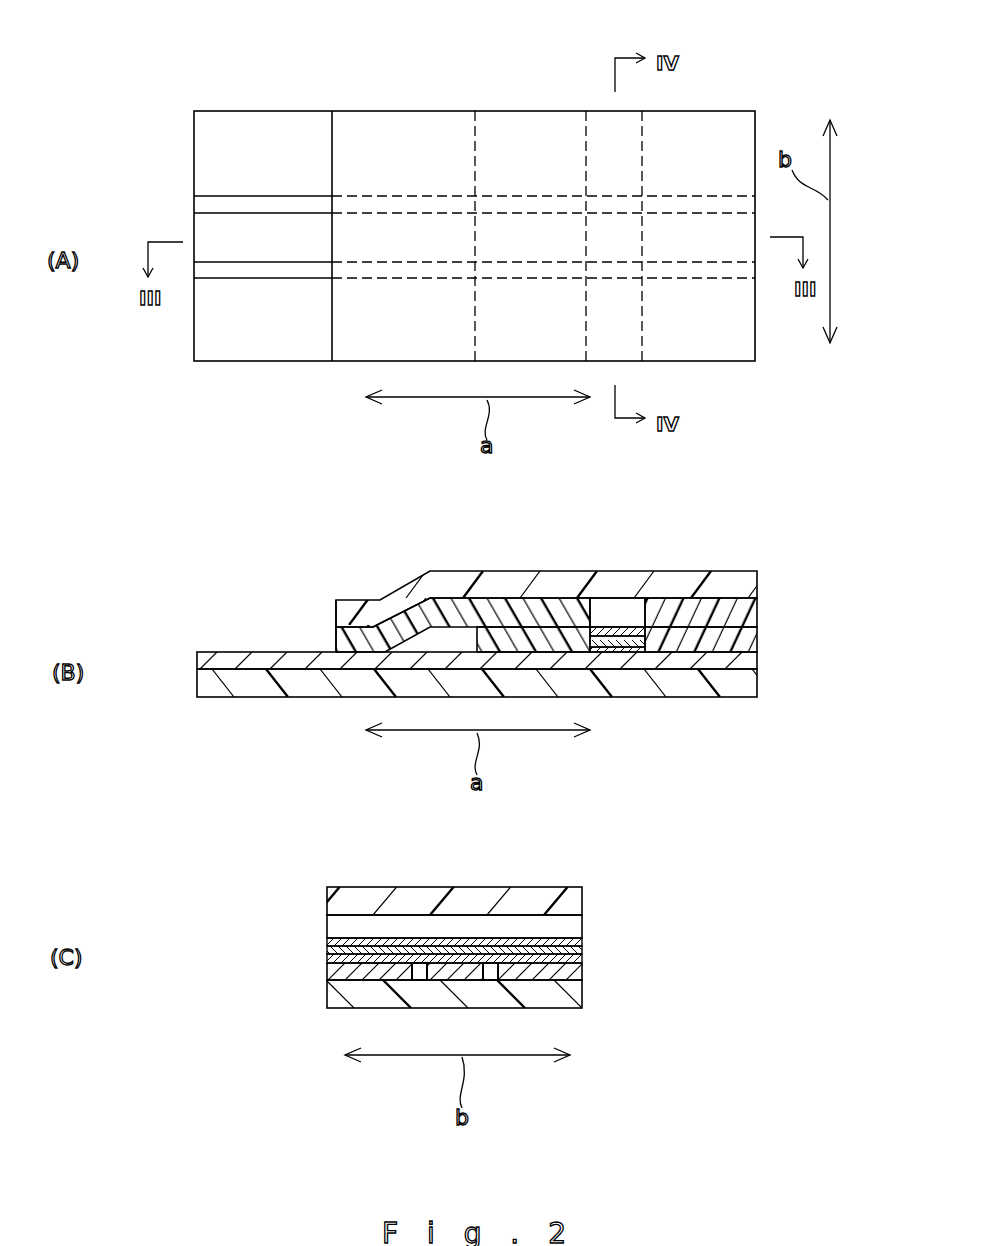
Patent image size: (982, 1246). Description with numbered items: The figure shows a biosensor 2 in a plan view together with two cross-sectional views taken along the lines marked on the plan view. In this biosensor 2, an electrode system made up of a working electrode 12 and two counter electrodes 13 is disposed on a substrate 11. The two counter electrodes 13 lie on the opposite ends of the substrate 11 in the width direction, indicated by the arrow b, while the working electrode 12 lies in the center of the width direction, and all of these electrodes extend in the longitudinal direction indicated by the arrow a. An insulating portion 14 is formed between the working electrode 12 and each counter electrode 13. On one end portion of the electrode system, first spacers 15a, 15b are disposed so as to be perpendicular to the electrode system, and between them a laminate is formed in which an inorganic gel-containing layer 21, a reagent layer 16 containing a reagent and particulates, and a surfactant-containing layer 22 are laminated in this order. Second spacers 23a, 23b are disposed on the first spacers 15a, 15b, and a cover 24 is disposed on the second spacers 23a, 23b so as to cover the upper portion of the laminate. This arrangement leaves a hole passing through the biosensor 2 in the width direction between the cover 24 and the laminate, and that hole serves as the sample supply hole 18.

The biosensor 2 is at (729, 81).
The substrate 11 is at (757, 683).
The working electrode 12 is at (198, 229).
The counter electrodes 13 is at (198, 118).
The insulating portion 14 is at (208, 272).
The first spacer 15a is at (757, 632).
The first spacer 15b is at (557, 630).
The reagent layer 16 is at (618, 646).
The sample supply hole 18 is at (617, 606).
The inorganic gel-containing layer 21 is at (603, 655).
The surfactant-containing layer 22 is at (604, 627).
The second spacer 23a is at (757, 605).
The second spacer 23b is at (345, 637).
The cover 24 is at (428, 124).